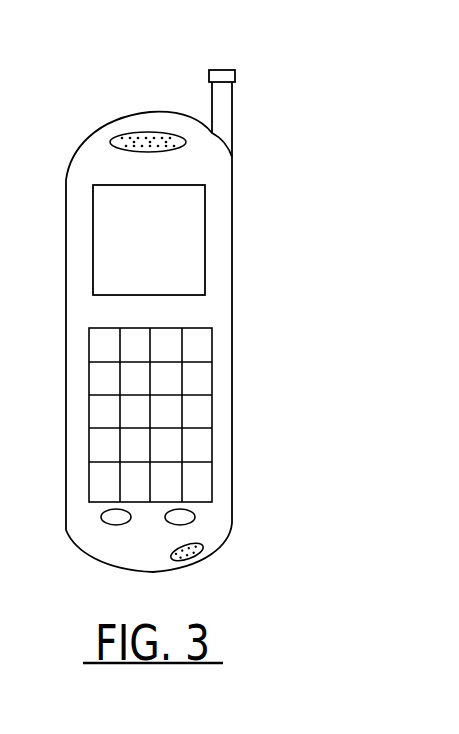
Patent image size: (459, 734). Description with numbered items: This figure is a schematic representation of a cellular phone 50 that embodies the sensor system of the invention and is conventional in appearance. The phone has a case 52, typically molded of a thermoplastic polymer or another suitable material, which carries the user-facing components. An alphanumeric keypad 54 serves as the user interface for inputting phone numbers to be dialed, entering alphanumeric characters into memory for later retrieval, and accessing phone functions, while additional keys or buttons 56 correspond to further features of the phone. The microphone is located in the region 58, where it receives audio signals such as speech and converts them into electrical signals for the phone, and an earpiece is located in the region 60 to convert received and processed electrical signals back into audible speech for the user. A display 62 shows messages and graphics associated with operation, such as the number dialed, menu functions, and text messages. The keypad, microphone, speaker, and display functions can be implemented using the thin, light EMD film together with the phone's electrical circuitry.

The cellular phone 50 is at (209, 292).
The case 52 is at (232, 298).
The alphanumeric keypad 54 is at (203, 380).
The keys or buttons 56 is at (192, 513).
The microphone region 58 is at (203, 545).
The earpiece region 60 is at (183, 137).
The display 62 is at (205, 237).